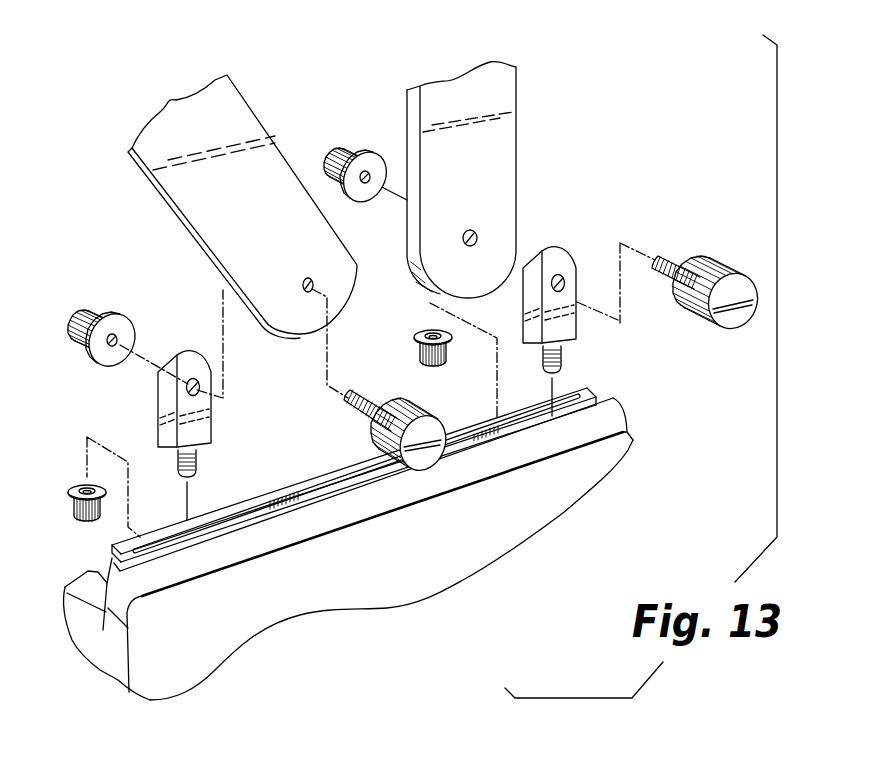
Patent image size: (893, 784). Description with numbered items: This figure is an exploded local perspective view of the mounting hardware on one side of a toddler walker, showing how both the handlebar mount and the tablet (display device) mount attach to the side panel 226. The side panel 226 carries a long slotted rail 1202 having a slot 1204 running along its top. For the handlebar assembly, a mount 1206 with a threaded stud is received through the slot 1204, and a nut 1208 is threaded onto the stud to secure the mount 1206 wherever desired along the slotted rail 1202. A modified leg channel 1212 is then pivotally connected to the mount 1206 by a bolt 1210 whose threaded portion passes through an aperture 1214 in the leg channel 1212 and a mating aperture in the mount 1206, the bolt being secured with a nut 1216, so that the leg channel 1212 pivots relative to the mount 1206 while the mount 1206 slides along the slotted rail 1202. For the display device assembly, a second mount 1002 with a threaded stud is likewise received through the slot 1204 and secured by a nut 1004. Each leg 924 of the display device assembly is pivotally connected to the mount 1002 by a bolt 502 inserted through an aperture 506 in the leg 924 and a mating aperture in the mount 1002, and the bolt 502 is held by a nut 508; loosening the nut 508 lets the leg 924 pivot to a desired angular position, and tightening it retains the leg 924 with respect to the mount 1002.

The side panel 226 is at (348, 588).
The bolt 502 is at (729, 262).
The aperture 506 is at (474, 236).
The nut 508 is at (351, 148).
The leg 924 is at (495, 98).
The mount 1002 is at (553, 262).
The nut 1004 is at (415, 351).
The slotted rail 1202 is at (275, 487).
The slot 1204 is at (222, 522).
The mount 1206 is at (182, 350).
The nut 1208 is at (83, 482).
The bolt 1210 is at (423, 460).
The leg channel 1212 is at (228, 108).
The aperture 1214 is at (306, 293).
The nut 1216 is at (104, 304).